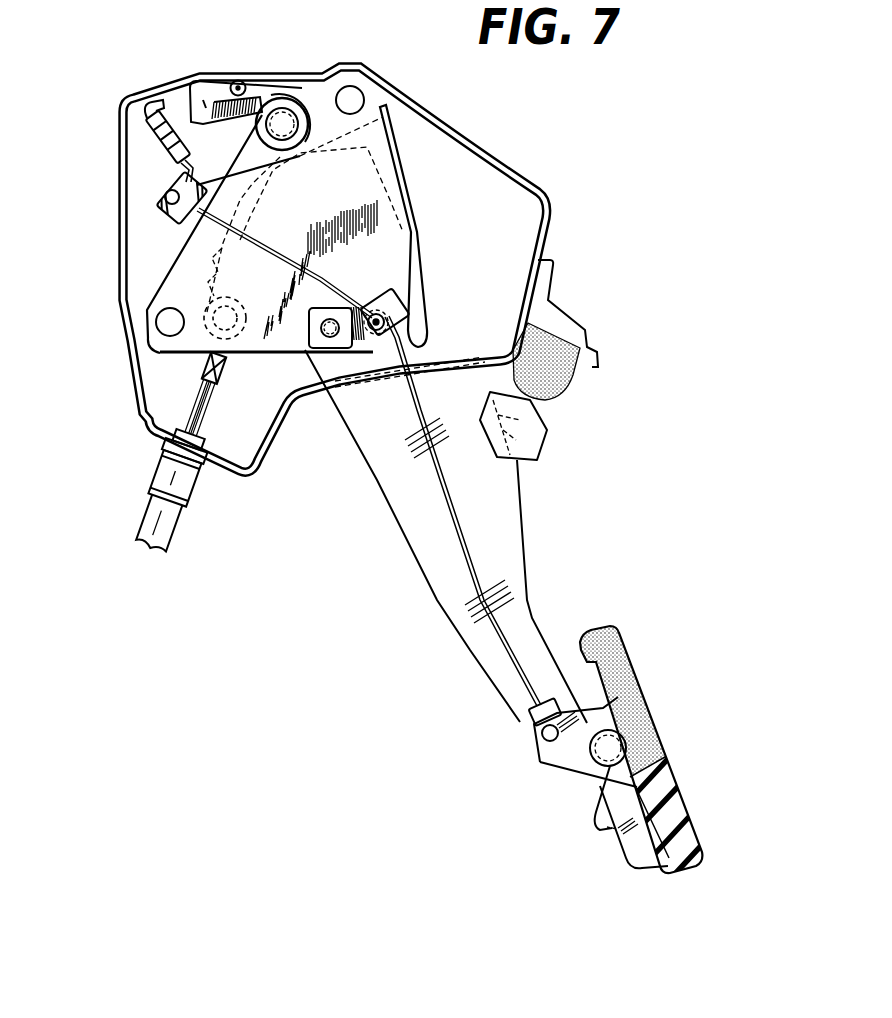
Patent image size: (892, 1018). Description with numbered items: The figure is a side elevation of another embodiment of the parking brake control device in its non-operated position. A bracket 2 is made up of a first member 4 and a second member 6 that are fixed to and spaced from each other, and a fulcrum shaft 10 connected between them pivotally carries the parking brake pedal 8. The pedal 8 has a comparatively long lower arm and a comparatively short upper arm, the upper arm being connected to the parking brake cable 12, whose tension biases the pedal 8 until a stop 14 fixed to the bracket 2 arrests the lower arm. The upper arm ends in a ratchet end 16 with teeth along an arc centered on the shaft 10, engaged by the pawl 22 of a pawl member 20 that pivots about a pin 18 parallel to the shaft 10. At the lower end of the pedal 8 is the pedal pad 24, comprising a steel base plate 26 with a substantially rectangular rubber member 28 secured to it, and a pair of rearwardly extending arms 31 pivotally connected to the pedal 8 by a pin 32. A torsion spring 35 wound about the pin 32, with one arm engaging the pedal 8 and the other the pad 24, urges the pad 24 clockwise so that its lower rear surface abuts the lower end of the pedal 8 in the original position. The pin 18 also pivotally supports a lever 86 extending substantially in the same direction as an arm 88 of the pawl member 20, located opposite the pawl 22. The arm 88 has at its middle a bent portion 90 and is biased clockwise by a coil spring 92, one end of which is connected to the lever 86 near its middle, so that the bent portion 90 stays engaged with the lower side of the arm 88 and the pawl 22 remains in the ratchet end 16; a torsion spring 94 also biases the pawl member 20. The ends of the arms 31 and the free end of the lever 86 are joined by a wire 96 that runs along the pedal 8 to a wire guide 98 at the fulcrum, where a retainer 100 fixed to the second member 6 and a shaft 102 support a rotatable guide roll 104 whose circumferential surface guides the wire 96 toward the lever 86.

The bracket 2 is at (510, 139).
The first member 4 is at (506, 184).
The second member 6 is at (383, 153).
The parking brake pedal 8 is at (512, 545).
The fulcrum shaft 10 is at (400, 302).
The parking brake cable 12 is at (205, 412).
The stop 14 is at (573, 381).
The ratchet end 16 is at (217, 252).
The pin 18 is at (299, 139).
The pawl member 20 is at (316, 92).
The pawl 22 is at (387, 122).
The pedal pad 24 is at (686, 742).
The base plate 26 is at (627, 834).
The rubber member 28 is at (681, 797).
The rearwardly extending arms 31 is at (572, 758).
The pin 32 is at (600, 762).
The torsion spring 35 is at (597, 828).
The lever 86 is at (255, 160).
The arm 88 is at (192, 100).
The bent portion 90 is at (166, 92).
The coil spring 92 is at (182, 158).
The torsion spring 94 is at (236, 80).
The wire 96 is at (460, 550).
The wire guide 98 is at (426, 321).
The retainer 100 is at (347, 352).
The shaft 102 is at (377, 333).
The guide roll 104 is at (372, 340).